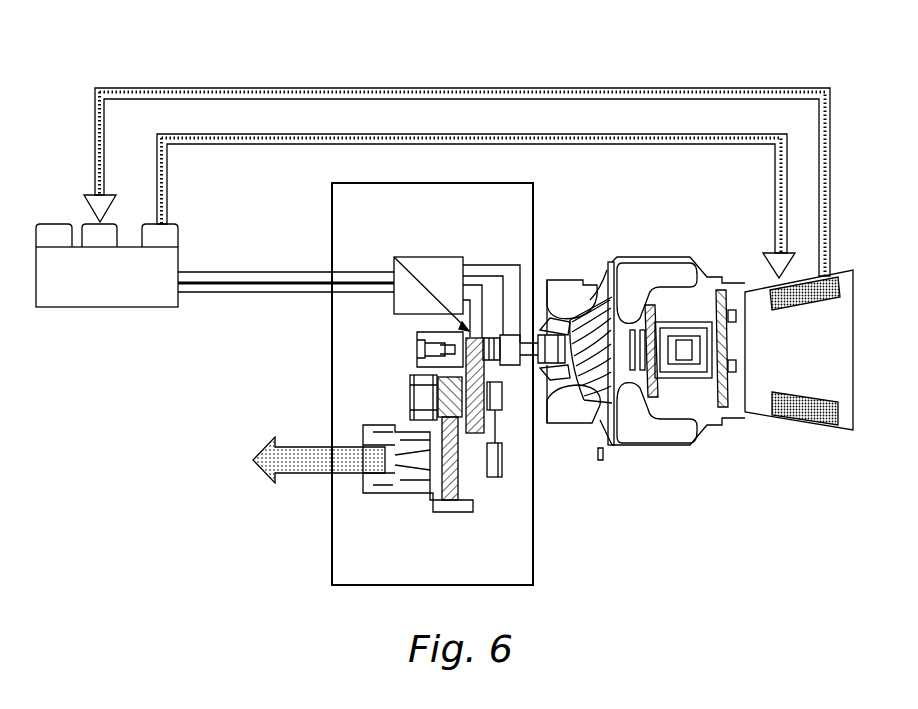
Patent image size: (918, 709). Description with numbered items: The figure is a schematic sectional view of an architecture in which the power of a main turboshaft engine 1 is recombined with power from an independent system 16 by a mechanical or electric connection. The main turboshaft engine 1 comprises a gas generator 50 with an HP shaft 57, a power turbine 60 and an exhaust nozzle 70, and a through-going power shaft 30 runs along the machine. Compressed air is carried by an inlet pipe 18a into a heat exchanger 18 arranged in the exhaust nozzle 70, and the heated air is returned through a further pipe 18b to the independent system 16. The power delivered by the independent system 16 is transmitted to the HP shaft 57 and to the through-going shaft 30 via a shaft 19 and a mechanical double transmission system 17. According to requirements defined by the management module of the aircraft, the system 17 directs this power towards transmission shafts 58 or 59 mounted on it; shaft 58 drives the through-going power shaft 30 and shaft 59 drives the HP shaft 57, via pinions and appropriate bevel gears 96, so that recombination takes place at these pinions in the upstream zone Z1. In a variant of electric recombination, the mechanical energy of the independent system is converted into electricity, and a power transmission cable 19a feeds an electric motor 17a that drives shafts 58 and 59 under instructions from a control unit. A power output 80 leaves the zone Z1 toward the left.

The main turboshaft engine 1 is at (646, 476).
The independent system 16 is at (107, 265).
The mechanical double transmission system 17 is at (405, 304).
The electric motor 17a is at (424, 268).
The heat exchanger 18 is at (796, 302).
The inlet pipe 18a is at (281, 144).
The pipe 18b is at (345, 88).
The shaft 19 is at (205, 293).
The power transmission cable 19a is at (225, 284).
The through-going power shaft 30 is at (432, 306).
The gas generator 50 is at (666, 274).
The HP shaft 57 is at (553, 322).
The transmission shaft 58 is at (470, 284).
The transmission shaft 59 is at (484, 276).
The power turbine 60 is at (722, 288).
The exhaust nozzle 70 is at (831, 361).
The power output 80 is at (298, 462).
The bevel gears 96 is at (500, 265).
The upstream zone Z1 is at (540, 548).